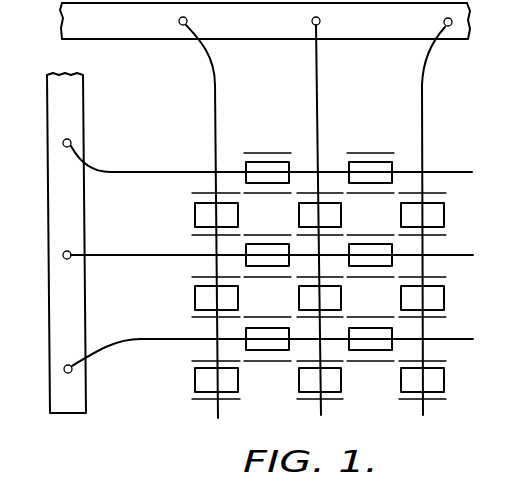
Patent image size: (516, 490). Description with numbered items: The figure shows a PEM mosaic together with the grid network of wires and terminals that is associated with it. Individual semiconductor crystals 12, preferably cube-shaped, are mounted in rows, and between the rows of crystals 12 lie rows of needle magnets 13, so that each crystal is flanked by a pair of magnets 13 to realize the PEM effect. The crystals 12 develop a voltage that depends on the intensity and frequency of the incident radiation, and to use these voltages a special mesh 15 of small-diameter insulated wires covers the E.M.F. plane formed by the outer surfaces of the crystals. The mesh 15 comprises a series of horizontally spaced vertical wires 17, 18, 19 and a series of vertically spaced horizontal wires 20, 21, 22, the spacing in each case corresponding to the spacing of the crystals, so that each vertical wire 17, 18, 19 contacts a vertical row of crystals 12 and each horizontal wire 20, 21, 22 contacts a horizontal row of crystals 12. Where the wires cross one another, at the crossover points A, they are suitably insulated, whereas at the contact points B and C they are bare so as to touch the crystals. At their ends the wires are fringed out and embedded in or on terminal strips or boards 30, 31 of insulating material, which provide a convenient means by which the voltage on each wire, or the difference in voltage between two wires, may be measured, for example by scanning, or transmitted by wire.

The semiconductor crystal 12 is at (242, 165).
The needle magnet 13 is at (270, 196).
The mesh 15 is at (437, 139).
The vertical wire 17 is at (217, 82).
The vertical wire 18 is at (318, 78).
The vertical wire 19 is at (423, 78).
The horizontal wire 20 is at (108, 170).
The horizontal wire 21 is at (142, 257).
The horizontal wire 22 is at (110, 338).
The terminal strip 30 is at (457, 24).
The terminal strip 31 is at (68, 413).
The crossover point A is at (215, 172).
The contact point B is at (217, 215).
The contact point C is at (267, 170).